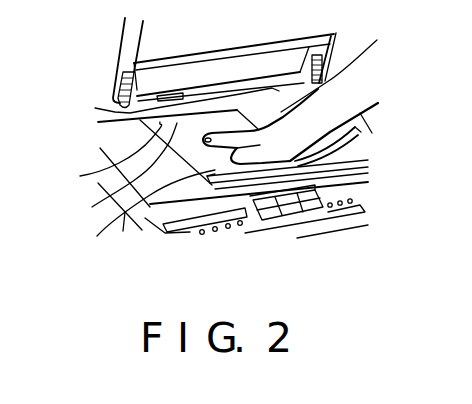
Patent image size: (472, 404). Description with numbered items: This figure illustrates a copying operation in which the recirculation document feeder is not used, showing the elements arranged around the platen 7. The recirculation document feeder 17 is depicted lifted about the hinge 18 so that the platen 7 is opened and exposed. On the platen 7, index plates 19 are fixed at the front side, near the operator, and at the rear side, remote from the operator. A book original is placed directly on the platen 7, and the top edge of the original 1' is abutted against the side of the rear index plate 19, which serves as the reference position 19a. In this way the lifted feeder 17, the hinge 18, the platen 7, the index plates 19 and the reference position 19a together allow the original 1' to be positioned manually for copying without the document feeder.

The recirculation document feeder 17 is at (193, 48).
The hinge 18 is at (140, 112).
The platen 7 is at (122, 148).
The index plates 19 is at (80, 176).
The reference position 19a is at (120, 205).
The original 1' is at (354, 139).